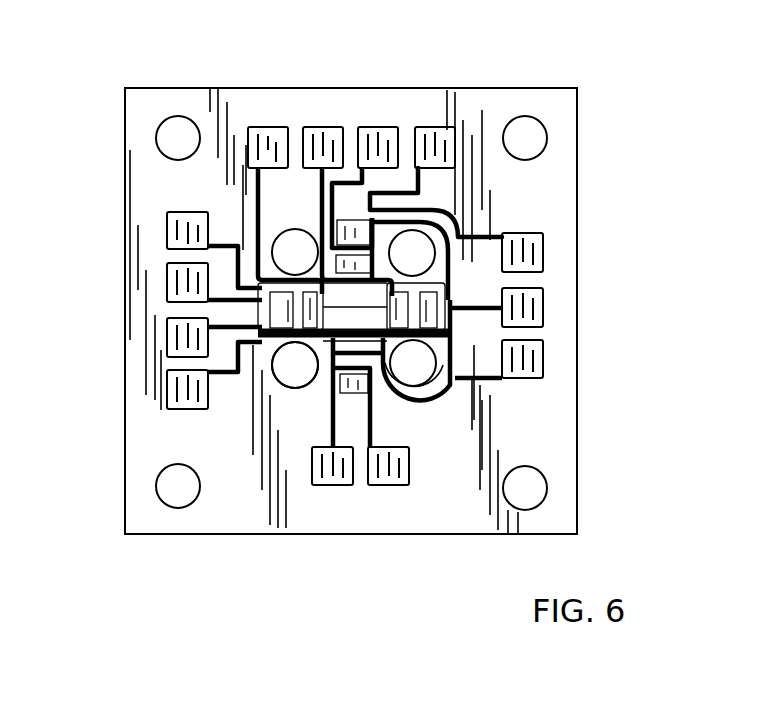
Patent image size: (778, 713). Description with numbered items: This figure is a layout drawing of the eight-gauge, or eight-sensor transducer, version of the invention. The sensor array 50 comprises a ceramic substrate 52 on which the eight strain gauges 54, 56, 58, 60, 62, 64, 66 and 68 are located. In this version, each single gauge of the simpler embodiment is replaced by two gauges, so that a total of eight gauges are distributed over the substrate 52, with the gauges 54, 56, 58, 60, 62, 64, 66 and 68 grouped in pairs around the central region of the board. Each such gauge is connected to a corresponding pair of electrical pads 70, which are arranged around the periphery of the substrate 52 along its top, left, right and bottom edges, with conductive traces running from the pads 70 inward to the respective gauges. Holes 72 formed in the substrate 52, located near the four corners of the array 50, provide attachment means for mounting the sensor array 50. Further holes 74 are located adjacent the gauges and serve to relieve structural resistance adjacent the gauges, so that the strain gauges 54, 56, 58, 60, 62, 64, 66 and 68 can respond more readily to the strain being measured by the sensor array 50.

The sensor array 50 is at (604, 192).
The substrate 52 is at (152, 216).
The strain gauge 54 is at (345, 225).
The strain gauge 56 is at (320, 268).
The strain gauge 58 is at (280, 300).
The strain gauge 60 is at (310, 342).
The strain gauge 62 is at (355, 380).
The strain gauge 64 is at (398, 348).
The strain gauge 66 is at (433, 300).
The strain gauge 68 is at (400, 235).
The electrical pads 70 is at (268, 150).
The holes 72 is at (170, 137).
The holes 74 is at (402, 230).